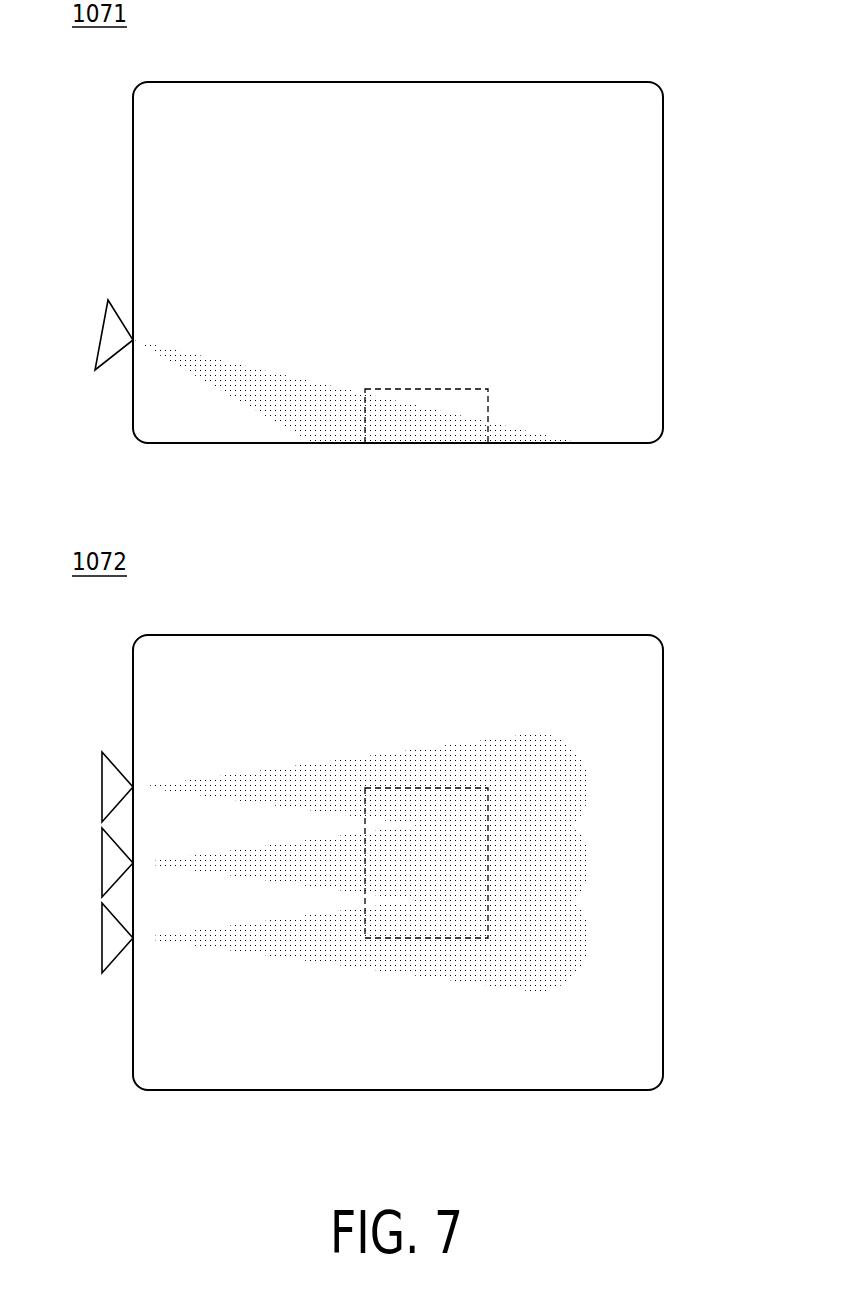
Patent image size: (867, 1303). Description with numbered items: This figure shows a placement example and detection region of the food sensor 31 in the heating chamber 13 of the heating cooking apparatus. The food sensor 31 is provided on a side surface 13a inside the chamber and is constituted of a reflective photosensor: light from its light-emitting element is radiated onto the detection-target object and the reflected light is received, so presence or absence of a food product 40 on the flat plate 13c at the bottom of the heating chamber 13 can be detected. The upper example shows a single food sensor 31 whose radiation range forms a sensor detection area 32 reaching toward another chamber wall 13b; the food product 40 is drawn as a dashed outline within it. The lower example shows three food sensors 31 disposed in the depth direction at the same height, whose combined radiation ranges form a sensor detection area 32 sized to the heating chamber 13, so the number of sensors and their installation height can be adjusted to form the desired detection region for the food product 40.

The heating chamber 13 is at (690, 90).
The side surface 13a is at (133, 147).
The right/bottom side of display area 13b is at (663, 271).
The flat plate 13c is at (597, 443).
The food sensor 31 is at (101, 332).
The sensor detection area 32 is at (288, 388).
The food product 40 is at (430, 388).